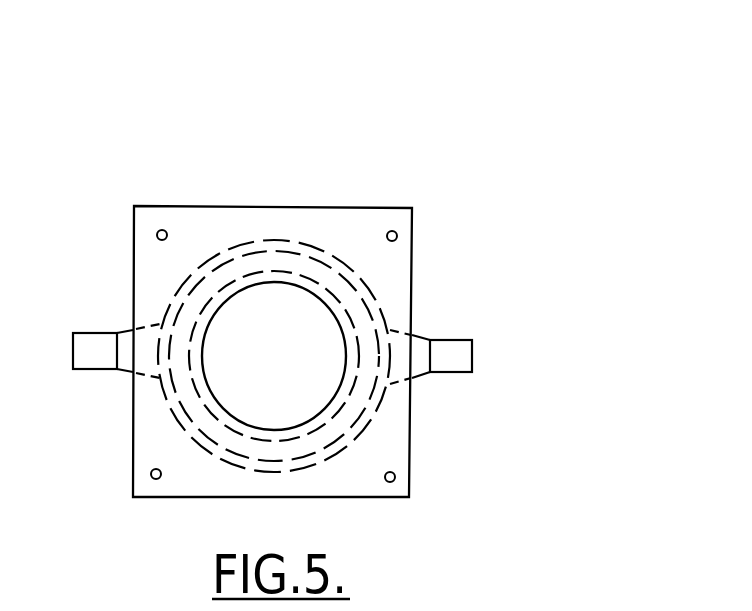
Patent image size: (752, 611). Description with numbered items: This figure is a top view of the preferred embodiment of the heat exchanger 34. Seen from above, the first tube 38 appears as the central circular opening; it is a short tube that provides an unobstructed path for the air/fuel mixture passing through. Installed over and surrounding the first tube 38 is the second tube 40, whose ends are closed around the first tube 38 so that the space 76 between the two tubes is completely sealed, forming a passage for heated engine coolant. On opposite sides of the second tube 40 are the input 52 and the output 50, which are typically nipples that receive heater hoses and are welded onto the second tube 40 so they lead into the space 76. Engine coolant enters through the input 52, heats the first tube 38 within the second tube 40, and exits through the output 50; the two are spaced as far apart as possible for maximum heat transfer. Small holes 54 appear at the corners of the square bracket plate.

The heat exchanger 34 is at (357, 118).
The first tube 38 is at (268, 282).
The second tube 40 is at (372, 288).
The output 50 is at (392, 360).
The input 52 is at (165, 342).
The mounting holes 54 is at (396, 233).
The space 76 is at (355, 400).